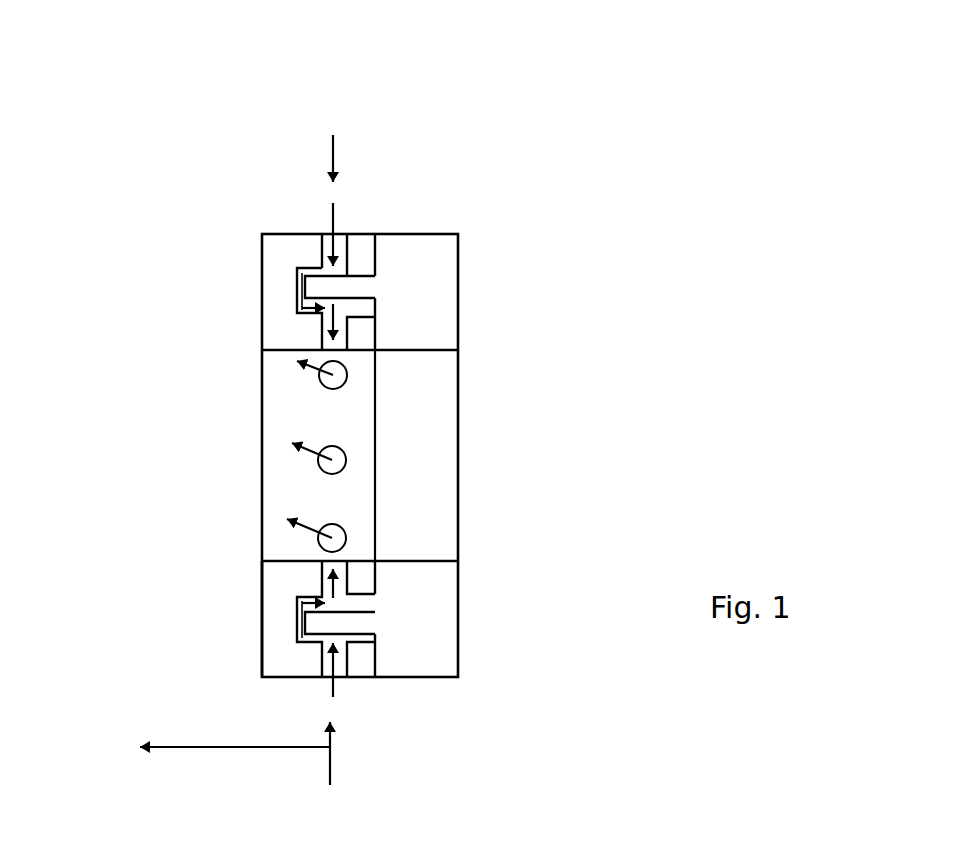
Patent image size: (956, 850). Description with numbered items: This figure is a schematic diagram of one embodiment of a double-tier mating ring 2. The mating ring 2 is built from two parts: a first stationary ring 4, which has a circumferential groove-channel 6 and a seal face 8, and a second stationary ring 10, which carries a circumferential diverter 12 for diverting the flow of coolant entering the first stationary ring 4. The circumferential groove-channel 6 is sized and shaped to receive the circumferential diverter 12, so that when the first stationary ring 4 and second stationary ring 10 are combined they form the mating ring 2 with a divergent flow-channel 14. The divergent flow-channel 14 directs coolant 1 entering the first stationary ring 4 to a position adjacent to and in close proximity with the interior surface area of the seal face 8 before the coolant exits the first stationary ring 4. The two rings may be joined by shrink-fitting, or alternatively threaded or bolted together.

The coolant 1 is at (217, 753).
The double-tier mating ring 2 is at (470, 359).
The first stationary ring 4 is at (272, 572).
The circumferential groove-channel 6 is at (297, 313).
The seal face 8 is at (262, 616).
The second stationary ring 10 is at (448, 401).
The circumferential diverter 12 is at (338, 272).
The divergent flow-channel 14 is at (340, 670).